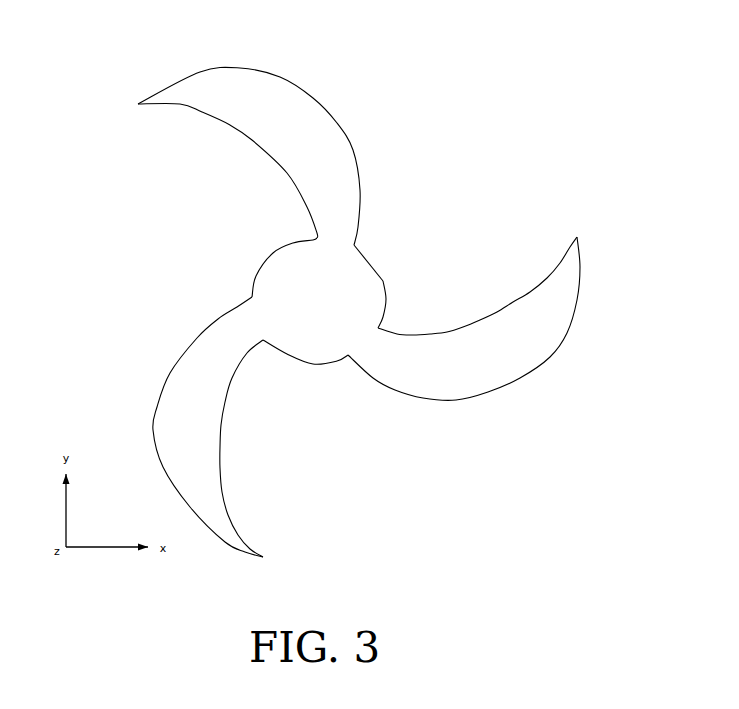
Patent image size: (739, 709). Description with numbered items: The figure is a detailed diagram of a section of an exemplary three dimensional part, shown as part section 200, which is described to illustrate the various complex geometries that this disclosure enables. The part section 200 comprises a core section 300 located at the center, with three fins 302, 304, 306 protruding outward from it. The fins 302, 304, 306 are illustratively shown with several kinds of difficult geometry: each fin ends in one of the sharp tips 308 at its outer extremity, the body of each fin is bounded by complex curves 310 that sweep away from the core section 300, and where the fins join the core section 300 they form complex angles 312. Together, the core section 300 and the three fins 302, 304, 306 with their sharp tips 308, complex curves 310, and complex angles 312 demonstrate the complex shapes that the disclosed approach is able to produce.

The part section 200 is at (355, 304).
The core section 300 is at (363, 280).
The fin 302 is at (312, 130).
The fin 304 is at (190, 435).
The fin 306 is at (538, 331).
The sharp tips 308 is at (133, 98).
The complex curves 310 is at (298, 75).
The complex angles 312 is at (312, 234).